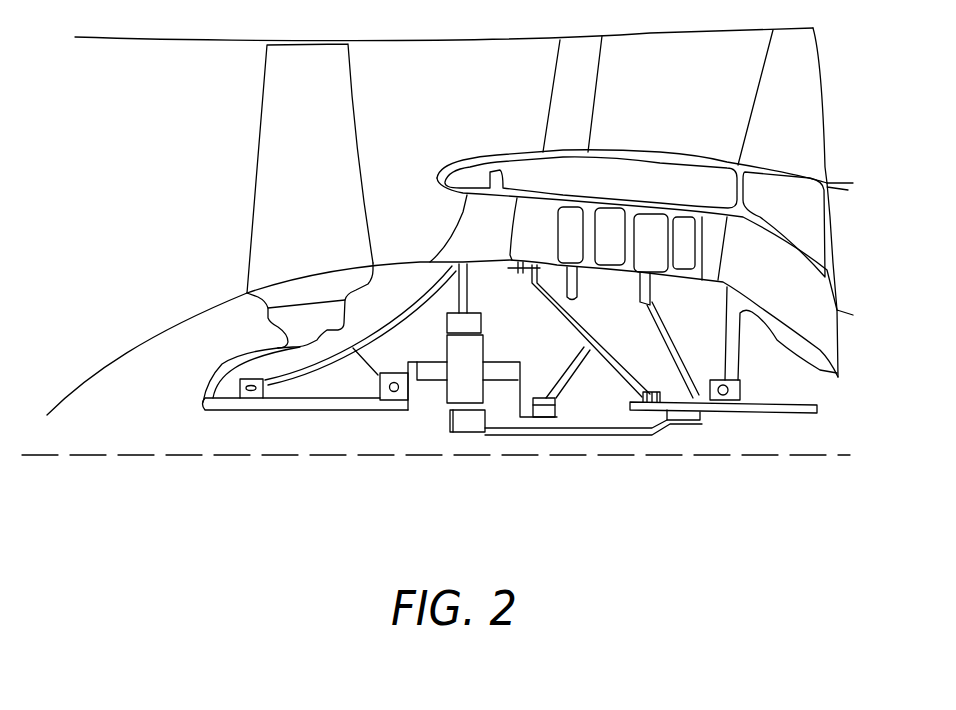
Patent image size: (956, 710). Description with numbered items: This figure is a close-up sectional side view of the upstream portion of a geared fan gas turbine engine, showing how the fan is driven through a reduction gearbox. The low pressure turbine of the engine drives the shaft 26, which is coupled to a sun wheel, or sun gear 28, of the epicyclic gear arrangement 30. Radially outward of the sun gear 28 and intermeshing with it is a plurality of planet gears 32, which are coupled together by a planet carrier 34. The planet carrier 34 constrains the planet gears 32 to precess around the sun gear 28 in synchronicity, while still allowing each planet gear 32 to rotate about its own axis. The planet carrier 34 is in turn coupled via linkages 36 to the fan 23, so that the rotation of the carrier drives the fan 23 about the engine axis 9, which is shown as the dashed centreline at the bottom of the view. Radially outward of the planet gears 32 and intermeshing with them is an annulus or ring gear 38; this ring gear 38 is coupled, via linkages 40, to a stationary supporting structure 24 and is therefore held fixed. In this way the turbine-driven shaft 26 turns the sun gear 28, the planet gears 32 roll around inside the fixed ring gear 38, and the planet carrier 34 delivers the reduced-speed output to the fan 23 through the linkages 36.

The engine axis 9 is at (140, 458).
The fan 23 is at (283, 170).
The stationary supporting structure 24 is at (470, 220).
The shaft 26 is at (600, 437).
The sun gear 28 is at (470, 418).
The epicyclic gear arrangement 30 is at (435, 405).
The planet gears 32 is at (452, 398).
The planet carrier 34 is at (517, 393).
The linkages 36 is at (413, 397).
The ring gear 38 is at (472, 322).
The linkages 40 is at (468, 295).